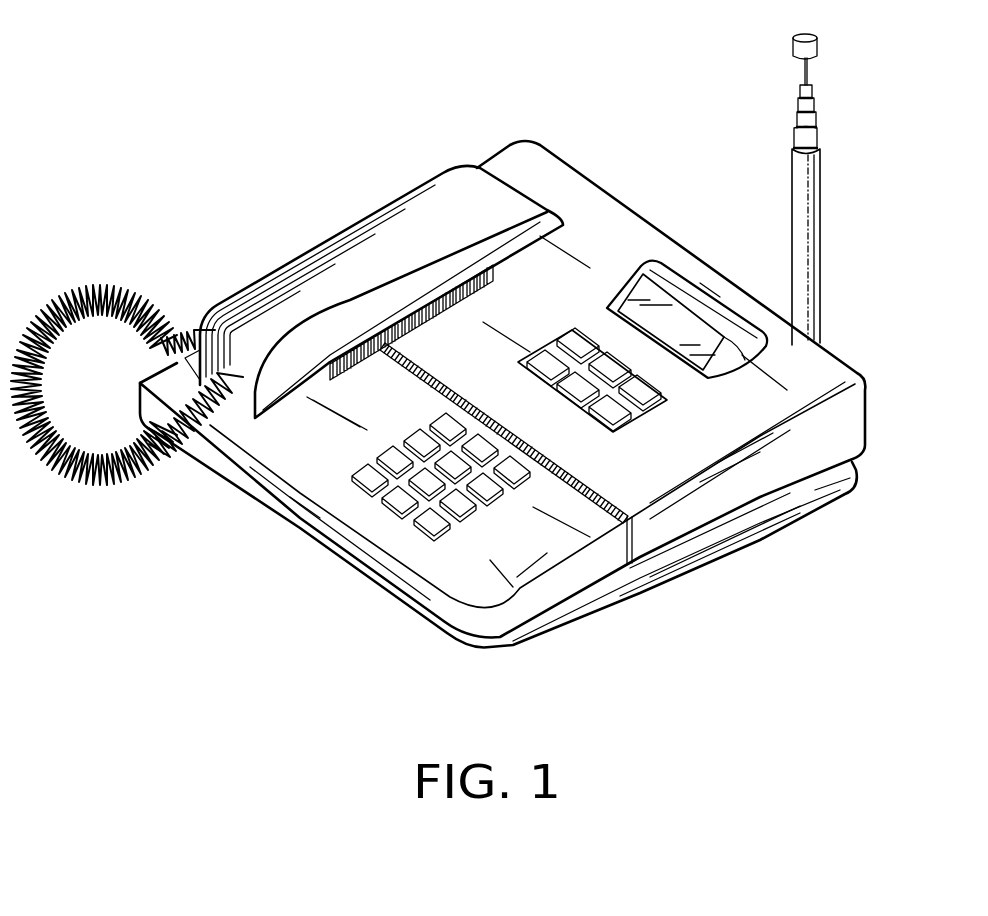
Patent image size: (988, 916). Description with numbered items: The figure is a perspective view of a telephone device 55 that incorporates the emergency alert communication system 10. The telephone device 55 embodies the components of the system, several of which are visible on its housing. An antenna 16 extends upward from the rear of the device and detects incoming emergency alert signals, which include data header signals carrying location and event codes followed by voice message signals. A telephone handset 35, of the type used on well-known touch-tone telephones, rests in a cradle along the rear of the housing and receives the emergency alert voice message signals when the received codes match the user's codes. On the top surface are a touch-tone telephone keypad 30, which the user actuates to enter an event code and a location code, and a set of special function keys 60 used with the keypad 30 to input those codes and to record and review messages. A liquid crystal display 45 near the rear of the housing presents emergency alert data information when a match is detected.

The emergency alert communication system 10 is at (172, 47).
The antenna 16 is at (792, 195).
The telephone keypad 30 is at (469, 507).
The telephone handset 35 is at (440, 190).
The liquid crystal display 45 is at (700, 355).
The telephone device 55 is at (625, 215).
The special function keys 60 is at (580, 322).